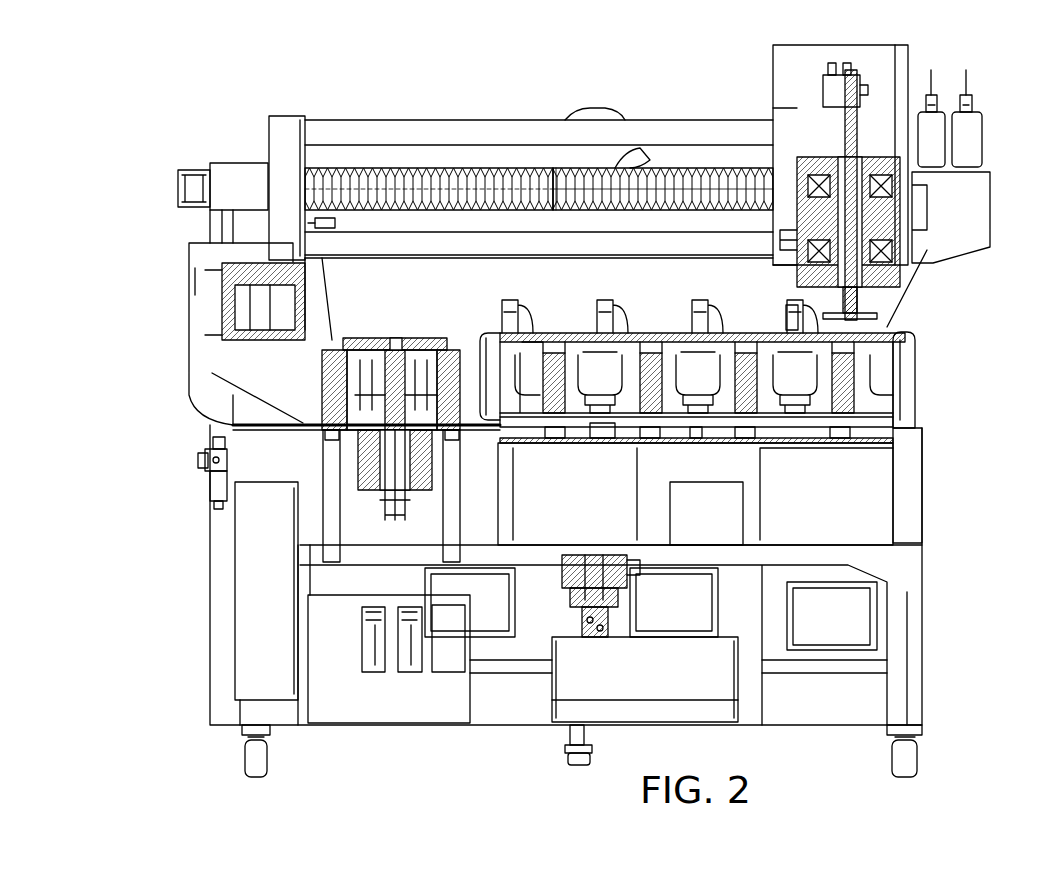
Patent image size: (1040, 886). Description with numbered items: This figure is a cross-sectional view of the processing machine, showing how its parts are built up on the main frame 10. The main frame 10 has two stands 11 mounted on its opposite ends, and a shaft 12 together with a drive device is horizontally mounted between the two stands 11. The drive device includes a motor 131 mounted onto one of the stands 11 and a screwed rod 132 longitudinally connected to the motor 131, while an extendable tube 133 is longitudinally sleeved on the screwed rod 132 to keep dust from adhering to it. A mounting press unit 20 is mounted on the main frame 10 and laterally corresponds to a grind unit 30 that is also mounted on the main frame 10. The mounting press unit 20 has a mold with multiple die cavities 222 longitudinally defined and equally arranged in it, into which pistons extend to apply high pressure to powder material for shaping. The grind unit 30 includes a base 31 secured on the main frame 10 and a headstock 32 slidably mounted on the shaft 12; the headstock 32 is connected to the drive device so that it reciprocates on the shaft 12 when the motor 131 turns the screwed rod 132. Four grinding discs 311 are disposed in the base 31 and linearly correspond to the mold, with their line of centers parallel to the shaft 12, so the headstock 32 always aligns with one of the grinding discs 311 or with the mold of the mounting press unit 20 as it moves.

The main frame 10 is at (937, 620).
The stands 11 is at (282, 133).
The shaft 12 is at (345, 134).
The motor 131 is at (235, 188).
The screwed rod 132 is at (443, 168).
The extendable tube 133 is at (693, 170).
The mounting press unit 20 is at (366, 412).
The die cavity 222 is at (408, 338).
The grind unit 30 is at (746, 355).
The base 31 is at (910, 405).
The grinding disc 311 is at (566, 333).
The headstock 32 is at (905, 52).